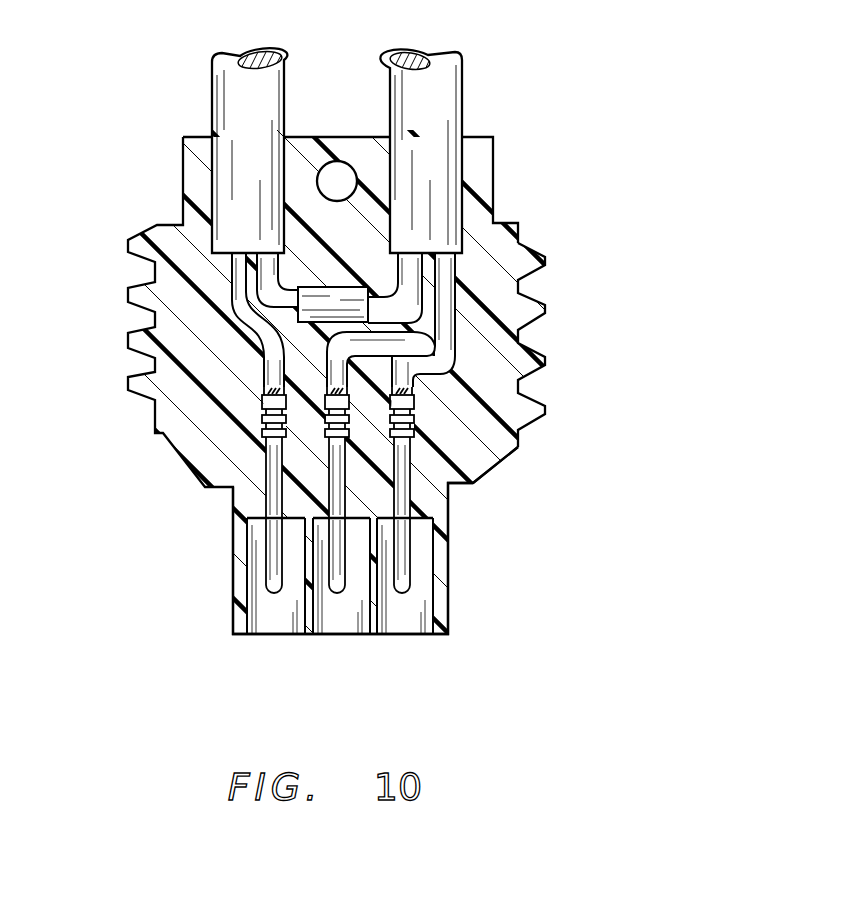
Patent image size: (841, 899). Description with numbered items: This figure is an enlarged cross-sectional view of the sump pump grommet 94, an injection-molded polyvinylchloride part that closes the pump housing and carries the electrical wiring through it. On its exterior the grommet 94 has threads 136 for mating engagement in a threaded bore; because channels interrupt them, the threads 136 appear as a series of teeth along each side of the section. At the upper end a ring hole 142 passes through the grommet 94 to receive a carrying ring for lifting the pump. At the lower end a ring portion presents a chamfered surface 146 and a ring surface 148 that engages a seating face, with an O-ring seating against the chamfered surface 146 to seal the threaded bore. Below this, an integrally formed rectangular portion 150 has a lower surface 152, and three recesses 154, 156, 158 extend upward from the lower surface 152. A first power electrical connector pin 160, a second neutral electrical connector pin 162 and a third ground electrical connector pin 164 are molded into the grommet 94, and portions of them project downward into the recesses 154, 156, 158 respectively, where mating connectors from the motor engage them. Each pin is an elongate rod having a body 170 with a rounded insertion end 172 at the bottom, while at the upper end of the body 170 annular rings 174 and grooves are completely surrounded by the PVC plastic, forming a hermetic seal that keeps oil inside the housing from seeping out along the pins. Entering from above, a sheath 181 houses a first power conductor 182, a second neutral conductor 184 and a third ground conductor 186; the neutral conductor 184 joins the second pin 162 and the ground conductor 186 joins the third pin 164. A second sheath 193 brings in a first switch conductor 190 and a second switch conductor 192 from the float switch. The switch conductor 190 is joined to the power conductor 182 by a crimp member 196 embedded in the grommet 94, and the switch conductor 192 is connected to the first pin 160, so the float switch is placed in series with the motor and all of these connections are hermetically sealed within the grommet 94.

The grommet 94 is at (521, 206).
The threads 136 is at (547, 310).
The ring hole 142 is at (336, 172).
The chamfered surface 146 is at (492, 465).
The ring surface 148 is at (462, 488).
The rectangular portion 150 is at (452, 575).
The lower surface 152 is at (432, 620).
The recess 154 is at (277, 620).
The recess 156 is at (339, 620).
The recess 158 is at (407, 620).
The first power electrical connector pin 160 is at (273, 551).
The second neutral electrical connector pin 162 is at (341, 558).
The third ground electrical connector pin 164 is at (417, 539).
The body 170 is at (402, 485).
The rounded insertion end 172 is at (277, 578).
The annular rings 174 is at (290, 434).
The sheath 181 is at (443, 108).
The first power conductor 182 is at (418, 332).
The second neutral conductor 184 is at (410, 277).
The third ground conductor 186 is at (505, 378).
The first switch conductor 190 is at (268, 292).
The second switch conductor 192 is at (234, 320).
The sheath 193 is at (238, 121).
The crimp member 196 is at (320, 302).